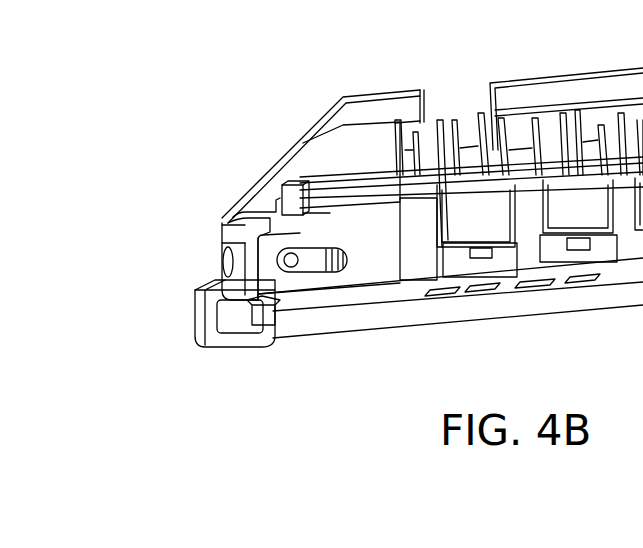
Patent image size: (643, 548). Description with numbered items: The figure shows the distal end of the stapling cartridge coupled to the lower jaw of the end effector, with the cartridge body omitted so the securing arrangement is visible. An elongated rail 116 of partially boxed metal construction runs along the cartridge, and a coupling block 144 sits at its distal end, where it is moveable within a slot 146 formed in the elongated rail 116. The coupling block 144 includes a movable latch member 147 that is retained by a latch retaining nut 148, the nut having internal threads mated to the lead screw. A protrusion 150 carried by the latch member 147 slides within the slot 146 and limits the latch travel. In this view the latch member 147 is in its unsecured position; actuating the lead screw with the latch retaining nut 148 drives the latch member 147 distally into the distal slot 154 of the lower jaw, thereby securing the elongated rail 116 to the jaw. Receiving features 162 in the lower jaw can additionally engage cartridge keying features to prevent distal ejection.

The elongated rail 116 is at (525, 252).
The coupling block 144 is at (207, 0).
The slot 146 is at (349, 313).
The latch member 147 is at (198, 325).
The latch retaining nut 148 is at (224, 262).
The protrusion 150 is at (323, 260).
The distal slot 154 is at (277, 323).
The receiving features 162 is at (456, 84).